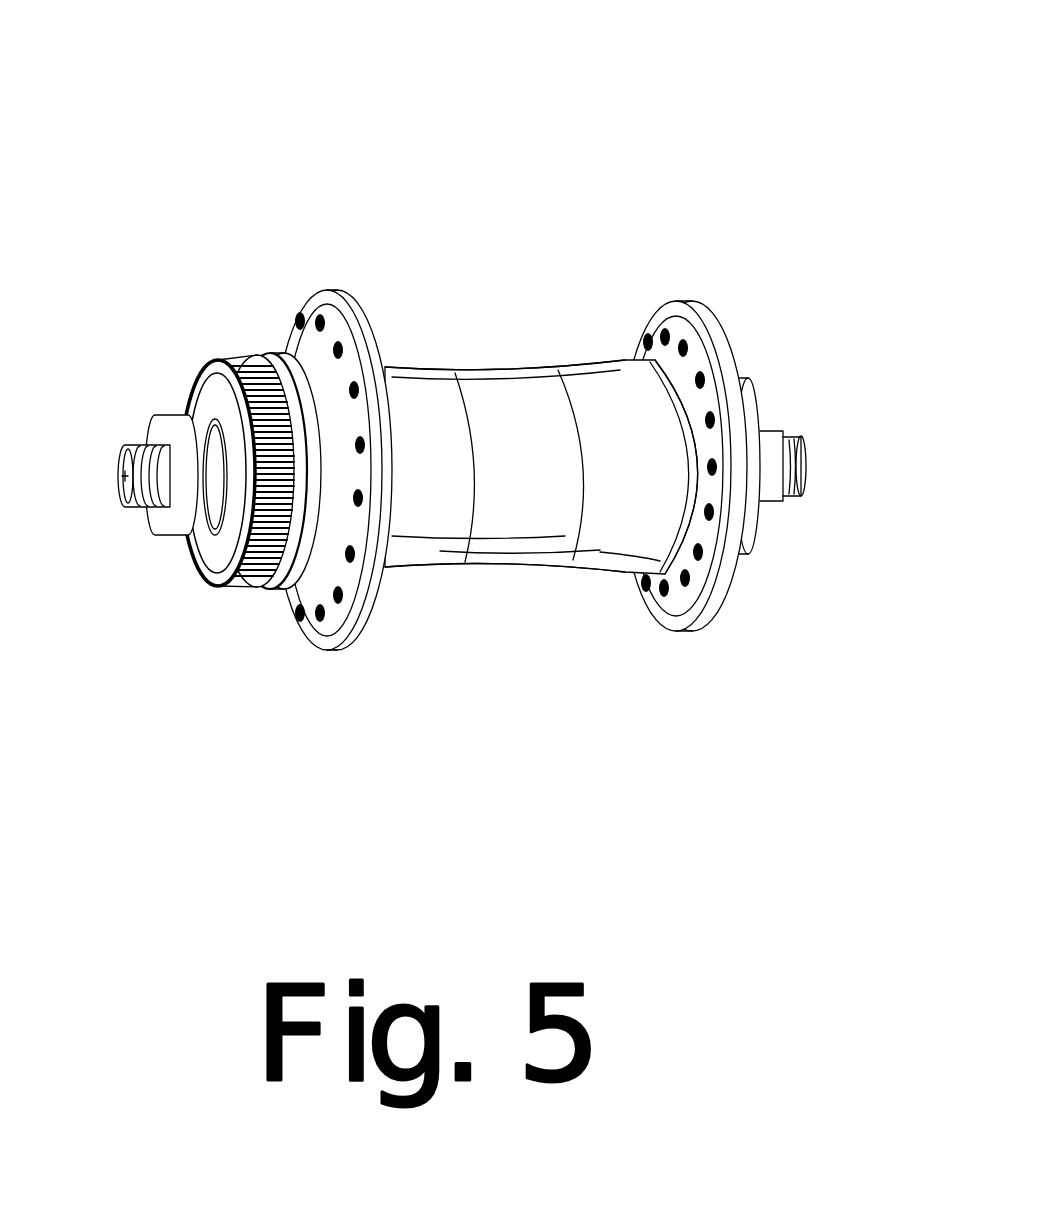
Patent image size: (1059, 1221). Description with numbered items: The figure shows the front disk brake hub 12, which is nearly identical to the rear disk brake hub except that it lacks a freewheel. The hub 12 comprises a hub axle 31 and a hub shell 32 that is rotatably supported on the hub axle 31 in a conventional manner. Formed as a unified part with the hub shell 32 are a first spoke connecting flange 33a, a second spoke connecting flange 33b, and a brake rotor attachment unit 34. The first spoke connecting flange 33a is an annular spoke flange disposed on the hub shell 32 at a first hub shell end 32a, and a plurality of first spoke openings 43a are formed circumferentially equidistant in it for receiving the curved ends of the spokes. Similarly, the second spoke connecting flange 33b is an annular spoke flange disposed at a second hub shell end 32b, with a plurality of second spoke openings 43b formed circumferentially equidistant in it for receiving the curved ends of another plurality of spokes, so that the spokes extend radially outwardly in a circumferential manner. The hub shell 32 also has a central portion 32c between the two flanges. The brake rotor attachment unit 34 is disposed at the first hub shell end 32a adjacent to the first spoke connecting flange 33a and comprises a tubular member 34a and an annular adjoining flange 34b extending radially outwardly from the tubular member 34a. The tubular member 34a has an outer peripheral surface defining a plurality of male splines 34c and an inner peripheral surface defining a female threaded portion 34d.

The front disk brake hub 12 is at (662, 126).
The hub axle 31 is at (118, 468).
The hub shell 32 is at (495, 340).
The first hub shell end 32a is at (390, 358).
The second hub shell end 32b is at (684, 390).
The central portion of hub body 32c is at (520, 545).
The first spoke connecting flange 33a is at (335, 655).
The second spoke connecting flange 33b is at (687, 638).
The brake rotor attachment unit 34 is at (222, 275).
The tubular member 34a is at (200, 578).
The annular adjoining flange 34b is at (265, 340).
The male splines 34c is at (247, 592).
The female threaded portion 34d is at (187, 380).
The first spoke openings 43a is at (357, 562).
The second spoke openings 43b is at (711, 514).